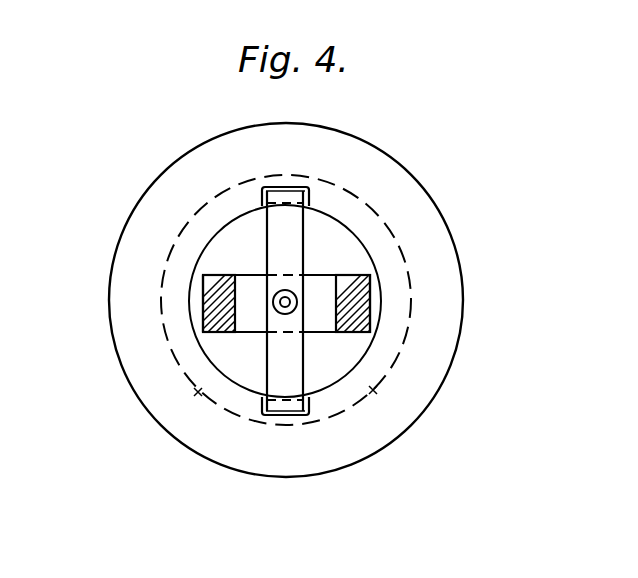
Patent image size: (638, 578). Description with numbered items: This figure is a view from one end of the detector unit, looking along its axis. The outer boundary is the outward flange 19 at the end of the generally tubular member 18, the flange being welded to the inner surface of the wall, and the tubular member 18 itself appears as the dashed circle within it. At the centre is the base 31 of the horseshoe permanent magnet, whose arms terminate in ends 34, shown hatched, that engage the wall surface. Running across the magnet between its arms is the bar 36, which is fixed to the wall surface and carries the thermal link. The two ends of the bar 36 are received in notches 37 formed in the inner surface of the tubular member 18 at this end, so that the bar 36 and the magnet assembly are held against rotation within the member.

The tubular member 18 is at (373, 390).
The outward flange 19 is at (130, 250).
The base of horseshoe permanent magnet 31 is at (323, 283).
The ends of magnet arms 34 is at (215, 305).
The bar 36 is at (280, 370).
The notches 37 is at (308, 408).